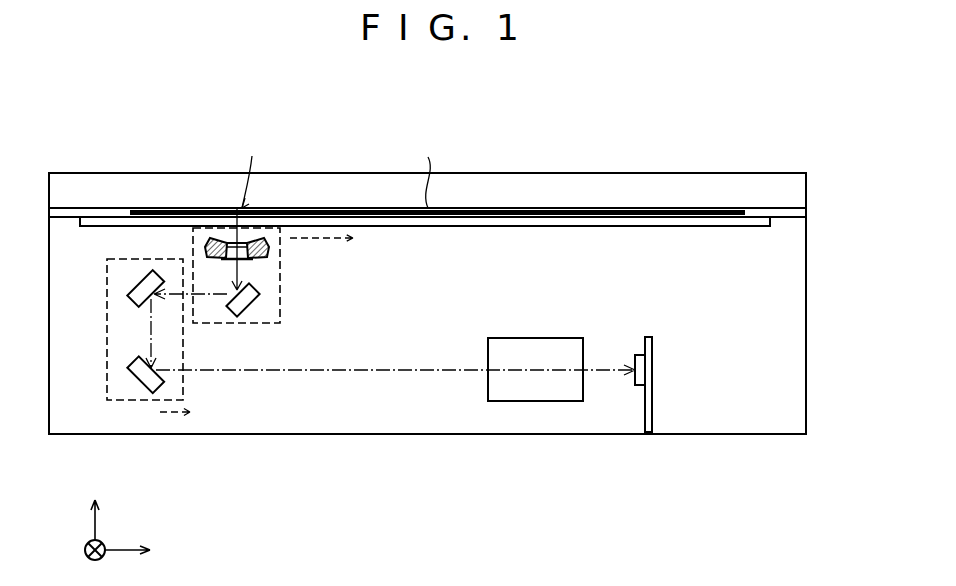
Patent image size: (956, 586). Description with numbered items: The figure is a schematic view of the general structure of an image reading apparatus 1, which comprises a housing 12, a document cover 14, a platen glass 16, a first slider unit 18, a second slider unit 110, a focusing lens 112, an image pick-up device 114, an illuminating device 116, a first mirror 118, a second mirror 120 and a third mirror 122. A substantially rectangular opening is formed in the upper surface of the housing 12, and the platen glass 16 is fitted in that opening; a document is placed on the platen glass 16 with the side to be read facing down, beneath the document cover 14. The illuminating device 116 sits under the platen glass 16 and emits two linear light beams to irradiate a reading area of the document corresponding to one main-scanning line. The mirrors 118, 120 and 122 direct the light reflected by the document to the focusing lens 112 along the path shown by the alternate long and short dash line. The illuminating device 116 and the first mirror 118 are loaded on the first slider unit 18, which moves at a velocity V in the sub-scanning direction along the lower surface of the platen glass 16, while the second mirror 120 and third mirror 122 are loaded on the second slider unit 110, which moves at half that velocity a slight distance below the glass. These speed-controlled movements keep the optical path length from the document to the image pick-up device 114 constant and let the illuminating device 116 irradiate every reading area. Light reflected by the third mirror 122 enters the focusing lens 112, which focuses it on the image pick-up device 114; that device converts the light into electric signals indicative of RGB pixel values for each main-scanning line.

The image reading apparatus 1 is at (54, 83).
The housing 12 is at (807, 327).
The document cover 14 is at (807, 197).
The platen glass 16 is at (727, 228).
The first slider unit 18 is at (280, 323).
The second slider unit 110 is at (105, 403).
The focusing lens 112 is at (533, 402).
The image pick-up device 114 is at (645, 408).
The illuminating device 116 is at (260, 262).
The first mirror 118 is at (258, 296).
The second mirror 120 is at (128, 294).
The third mirror 122 is at (127, 368).